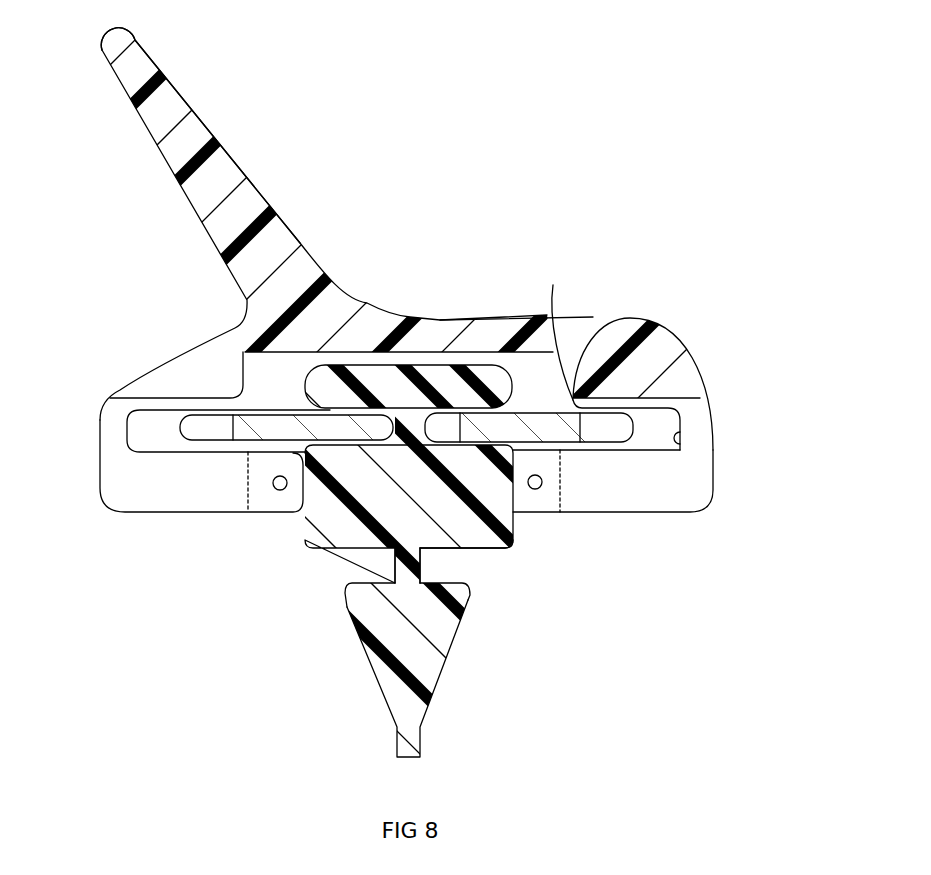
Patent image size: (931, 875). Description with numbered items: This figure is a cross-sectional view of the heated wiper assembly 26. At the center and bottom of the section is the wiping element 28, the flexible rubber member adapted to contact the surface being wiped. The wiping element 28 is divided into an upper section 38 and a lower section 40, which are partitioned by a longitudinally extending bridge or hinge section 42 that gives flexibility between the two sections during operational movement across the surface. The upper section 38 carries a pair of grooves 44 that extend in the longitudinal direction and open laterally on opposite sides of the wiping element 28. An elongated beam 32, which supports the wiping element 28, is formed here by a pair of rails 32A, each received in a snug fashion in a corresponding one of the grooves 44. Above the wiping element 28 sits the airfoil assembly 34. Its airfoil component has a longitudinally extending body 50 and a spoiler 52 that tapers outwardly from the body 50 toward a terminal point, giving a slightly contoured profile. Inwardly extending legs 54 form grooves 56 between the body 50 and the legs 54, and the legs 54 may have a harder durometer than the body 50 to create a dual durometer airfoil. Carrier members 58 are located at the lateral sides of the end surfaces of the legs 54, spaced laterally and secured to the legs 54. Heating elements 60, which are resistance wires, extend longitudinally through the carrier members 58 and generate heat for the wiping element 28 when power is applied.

The heated wiper assembly 26 is at (517, 137).
The wiping element 28 is at (513, 552).
The elongated beam 32 is at (536, 393).
The rails 32A is at (277, 417).
The airfoil assembly 34 is at (200, 121).
The upper section 38 is at (352, 537).
The lower section 40 is at (400, 697).
The hinge section 42 is at (345, 588).
The grooves 44 is at (330, 548).
The body 50 is at (650, 370).
The spoiler 52 is at (200, 200).
The legs 54 is at (136, 483).
The grooves 56 is at (132, 430).
The carrier members 58 is at (257, 481).
The heating elements 60 is at (277, 490).